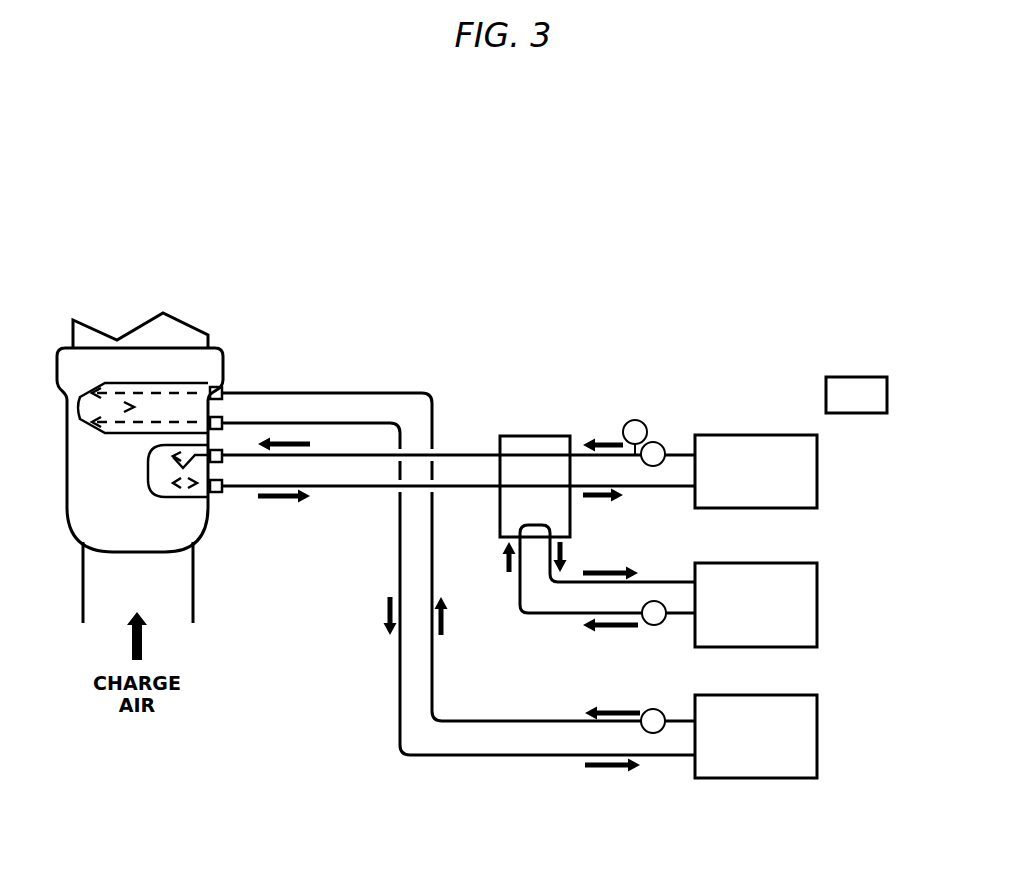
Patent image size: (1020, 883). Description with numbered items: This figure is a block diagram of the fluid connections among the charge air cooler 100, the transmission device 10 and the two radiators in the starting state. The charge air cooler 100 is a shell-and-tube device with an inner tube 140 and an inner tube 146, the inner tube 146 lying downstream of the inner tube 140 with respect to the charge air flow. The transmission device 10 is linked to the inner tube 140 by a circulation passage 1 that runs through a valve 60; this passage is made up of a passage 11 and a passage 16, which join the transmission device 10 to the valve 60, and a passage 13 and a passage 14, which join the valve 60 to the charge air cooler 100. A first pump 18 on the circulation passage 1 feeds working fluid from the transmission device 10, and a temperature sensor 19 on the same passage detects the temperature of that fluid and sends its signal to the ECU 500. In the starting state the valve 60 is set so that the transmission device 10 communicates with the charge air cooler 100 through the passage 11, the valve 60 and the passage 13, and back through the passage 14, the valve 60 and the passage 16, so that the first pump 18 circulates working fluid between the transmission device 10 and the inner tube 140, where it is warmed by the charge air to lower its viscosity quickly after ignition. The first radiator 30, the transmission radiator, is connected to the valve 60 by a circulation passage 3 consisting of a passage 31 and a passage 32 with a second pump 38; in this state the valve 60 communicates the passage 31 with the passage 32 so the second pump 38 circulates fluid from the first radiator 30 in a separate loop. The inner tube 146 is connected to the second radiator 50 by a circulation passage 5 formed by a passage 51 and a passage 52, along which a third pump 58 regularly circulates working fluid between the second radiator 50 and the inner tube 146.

The circulation passage 1 is at (709, 353).
The circulation passage 3 is at (537, 645).
The circulation passage 5 is at (578, 785).
The transmission device 10 is at (818, 452).
The passage 11 is at (603, 510).
The passage 13 is at (314, 453).
The passage 14 is at (312, 506).
The passage 16 is at (632, 505).
The first pump 18 is at (664, 444).
The temperature sensor 19 is at (647, 421).
The first radiator 30 is at (820, 600).
The passage 31 is at (545, 556).
The passage 32 is at (637, 632).
The second pump 38 is at (663, 601).
The second radiator 50 is at (820, 738).
The passage 51 is at (433, 719).
The passage 52 is at (507, 758).
The third pump 58 is at (662, 709).
The valve 60 is at (525, 434).
The charge air cooler 100 is at (83, 318).
The inner tube 140 is at (208, 498).
The inner tube 146 is at (178, 393).
The ECU 500 is at (836, 375).